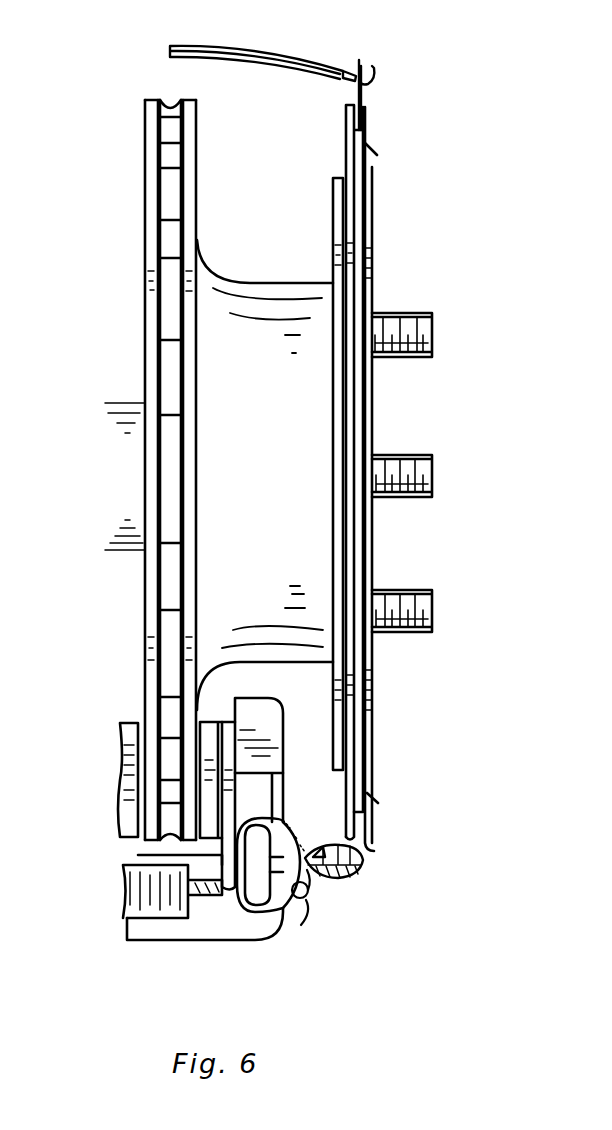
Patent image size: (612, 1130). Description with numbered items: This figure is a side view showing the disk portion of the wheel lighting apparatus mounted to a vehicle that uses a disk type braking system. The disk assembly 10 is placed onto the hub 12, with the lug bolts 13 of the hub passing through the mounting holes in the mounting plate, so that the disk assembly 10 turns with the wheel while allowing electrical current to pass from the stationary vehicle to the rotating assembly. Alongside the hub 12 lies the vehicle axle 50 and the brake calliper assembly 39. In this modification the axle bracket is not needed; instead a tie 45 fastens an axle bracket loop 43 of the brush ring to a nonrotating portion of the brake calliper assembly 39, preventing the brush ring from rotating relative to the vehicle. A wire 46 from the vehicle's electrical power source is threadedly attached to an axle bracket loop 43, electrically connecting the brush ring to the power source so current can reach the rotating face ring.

The disk assembly 10 is at (380, 208).
The hub 12 is at (333, 222).
The lug bolts 13 is at (432, 329).
The brake calliper assembly 39 is at (246, 884).
The axle bracket loops 43 is at (365, 59).
The tie 45 is at (306, 868).
The wire 46 is at (303, 57).
The vehicle axle 50 is at (101, 452).